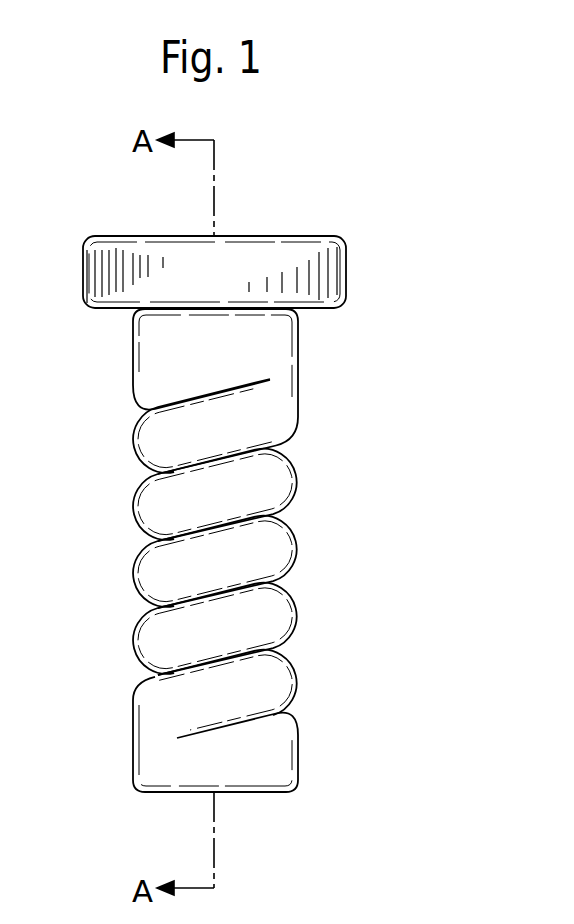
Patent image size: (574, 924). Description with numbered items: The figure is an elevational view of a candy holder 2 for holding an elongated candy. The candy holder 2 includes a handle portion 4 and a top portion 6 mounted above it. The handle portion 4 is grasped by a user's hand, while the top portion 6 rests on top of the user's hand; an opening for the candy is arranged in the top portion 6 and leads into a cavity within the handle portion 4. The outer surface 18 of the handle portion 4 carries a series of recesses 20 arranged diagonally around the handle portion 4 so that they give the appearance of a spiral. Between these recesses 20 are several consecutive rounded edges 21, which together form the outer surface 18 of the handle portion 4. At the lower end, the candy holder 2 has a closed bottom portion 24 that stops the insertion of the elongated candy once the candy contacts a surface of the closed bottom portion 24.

The candy holder 2 is at (395, 238).
The handle portion 4 is at (357, 311).
The top portion 6 is at (357, 237).
The outer surface 18 is at (300, 363).
The recesses 20 is at (138, 408).
The rounded edges 21 is at (133, 580).
The closed bottom portion 24 is at (246, 800).